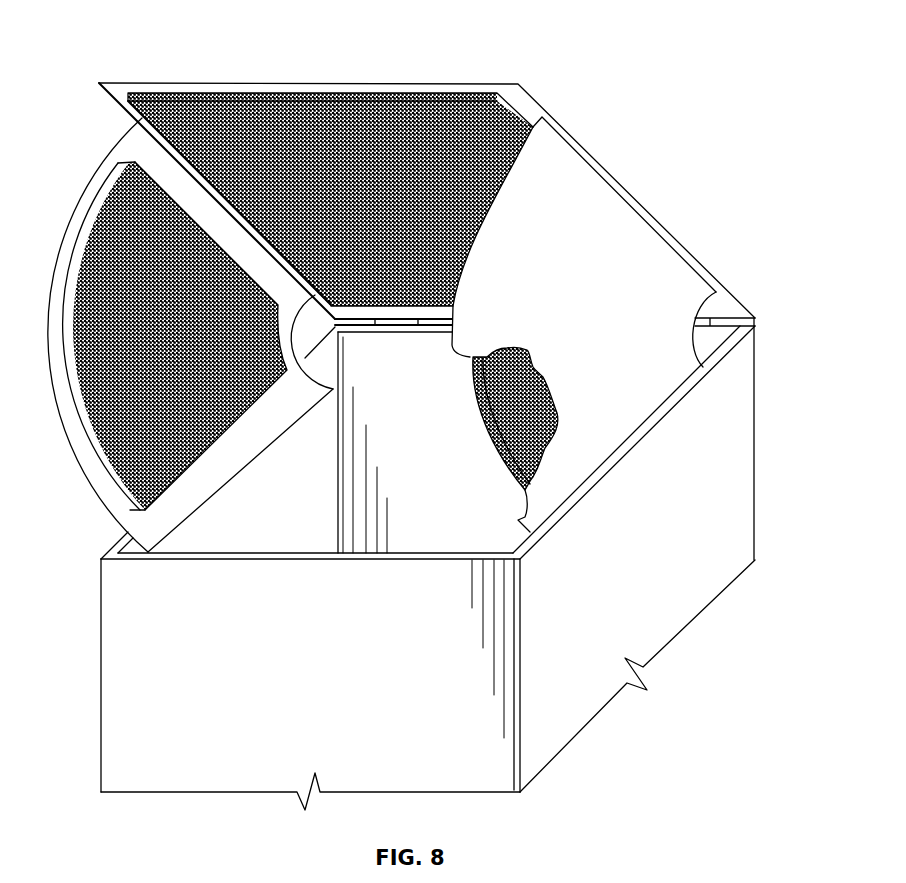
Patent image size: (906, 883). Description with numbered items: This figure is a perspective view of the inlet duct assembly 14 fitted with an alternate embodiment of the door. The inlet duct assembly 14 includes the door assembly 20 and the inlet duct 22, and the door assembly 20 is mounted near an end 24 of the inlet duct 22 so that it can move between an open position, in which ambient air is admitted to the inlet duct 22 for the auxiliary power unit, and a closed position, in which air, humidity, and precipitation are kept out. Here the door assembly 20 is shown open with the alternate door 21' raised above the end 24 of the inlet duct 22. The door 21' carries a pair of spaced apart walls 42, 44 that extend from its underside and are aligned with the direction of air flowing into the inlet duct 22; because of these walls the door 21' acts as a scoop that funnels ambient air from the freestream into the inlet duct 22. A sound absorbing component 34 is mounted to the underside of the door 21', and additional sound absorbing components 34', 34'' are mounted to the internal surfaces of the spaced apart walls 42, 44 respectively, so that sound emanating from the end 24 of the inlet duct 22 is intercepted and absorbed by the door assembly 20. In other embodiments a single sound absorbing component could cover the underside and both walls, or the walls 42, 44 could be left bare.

The inlet duct assembly 14 is at (772, 539).
The door assembly 20 is at (425, 80).
The door 21' is at (330, 91).
The inlet duct 22 is at (101, 771).
The end 24 is at (101, 605).
The sound absorbing component 34 is at (330, 175).
The sound absorbing component 34' is at (186, 357).
The sound absorbing component 34'' is at (495, 439).
The spaced apart wall 42 is at (113, 141).
The spaced apart wall 44 is at (594, 184).